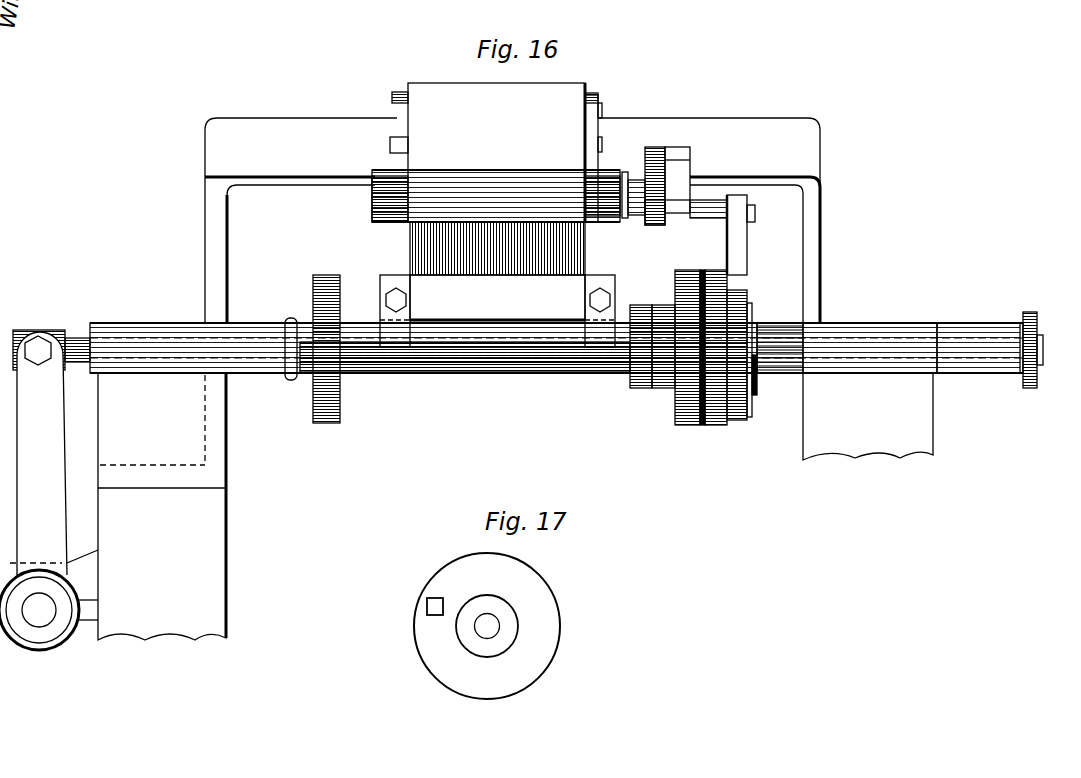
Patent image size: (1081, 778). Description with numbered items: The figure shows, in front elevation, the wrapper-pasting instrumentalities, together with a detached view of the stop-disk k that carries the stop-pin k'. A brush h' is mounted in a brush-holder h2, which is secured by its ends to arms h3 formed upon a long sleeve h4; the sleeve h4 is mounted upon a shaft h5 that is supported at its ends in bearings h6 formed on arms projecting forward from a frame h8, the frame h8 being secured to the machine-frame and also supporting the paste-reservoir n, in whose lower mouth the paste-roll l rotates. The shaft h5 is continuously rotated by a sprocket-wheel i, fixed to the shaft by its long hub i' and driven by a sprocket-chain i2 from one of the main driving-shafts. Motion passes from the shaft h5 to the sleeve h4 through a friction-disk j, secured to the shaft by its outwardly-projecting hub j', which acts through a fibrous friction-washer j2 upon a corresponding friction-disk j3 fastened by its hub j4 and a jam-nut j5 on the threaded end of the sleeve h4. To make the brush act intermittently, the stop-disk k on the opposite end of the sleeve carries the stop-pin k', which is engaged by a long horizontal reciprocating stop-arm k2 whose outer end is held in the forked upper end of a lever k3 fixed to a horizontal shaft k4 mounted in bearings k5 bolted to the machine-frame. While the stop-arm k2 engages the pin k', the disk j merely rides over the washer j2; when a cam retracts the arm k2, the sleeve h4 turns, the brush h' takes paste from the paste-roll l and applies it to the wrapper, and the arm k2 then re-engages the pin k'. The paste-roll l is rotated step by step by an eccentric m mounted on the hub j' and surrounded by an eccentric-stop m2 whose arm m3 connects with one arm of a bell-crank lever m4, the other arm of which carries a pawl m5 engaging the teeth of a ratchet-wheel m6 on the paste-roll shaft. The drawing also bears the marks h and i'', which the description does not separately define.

In FIG. 16, the main shaft h is at (556, 337).
In FIG. 16, the brush h' is at (483, 248).
In FIG. 16, the brush-holder h2 is at (497, 297).
In FIG. 16, the arms h3 is at (385, 280).
In FIG. 16, the long sleeve h4 is at (488, 372).
In FIG. 16, the shaft h5 is at (576, 338).
In FIG. 16, the bearings h6 is at (847, 334).
In FIG. 16, the frame h8 is at (215, 248).
In FIG. 16, the sprocket-wheel i is at (1033, 337).
In FIG. 16, the long hub i' is at (633, 181).
In FIG. 16, the shaft end i'' is at (980, 336).
In FIG. 16, the sprocket-chain i2 is at (368, 219).
In FIG. 16, the friction-disk j is at (726, 376).
In FIG. 16, the hub j' is at (780, 335).
In FIG. 16, the friction-washer j2 is at (702, 426).
In FIG. 16, the friction-disk j3 is at (683, 426).
In FIG. 16, the hub j4 is at (661, 389).
In FIG. 16, the jam-nut j5 is at (636, 389).
In FIG. 16, the stop-disk k is at (312, 373).
In FIG. 17, the stop-disk k is at (499, 626).
In FIG. 16, the stop-pin k' is at (162, 506).
In FIG. 17, the stop-pin k' is at (444, 593).
In FIG. 16, the stop-arm k2 is at (73, 336).
In FIG. 16, the lever k3 is at (39, 490).
In FIG. 16, the shaft k4 is at (37, 617).
In FIG. 16, the bearings k5 is at (82, 577).
In FIG. 16, the paste-roll l is at (486, 188).
In FIG. 16, the paste-reservoir n is at (496, 152).
In FIG. 16, the eccentric m is at (748, 418).
In FIG. 16, the eccentric-stop m2 is at (743, 425).
In FIG. 16, the arm m3 is at (733, 245).
In FIG. 16, the bell-crank lever m4 is at (680, 174).
In FIG. 16, the pawl m5 is at (656, 153).
In FIG. 16, the ratchet-wheel m6 is at (657, 224).